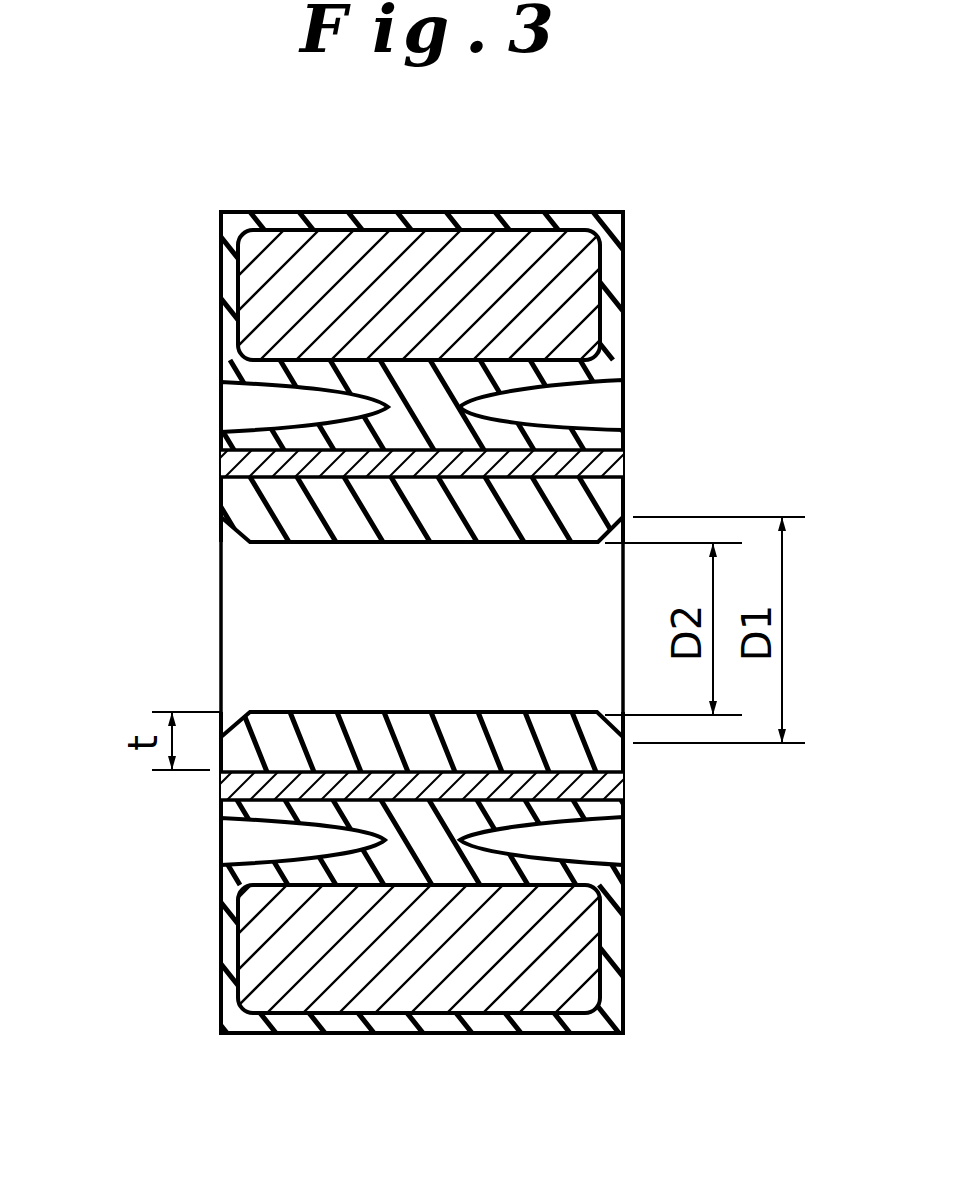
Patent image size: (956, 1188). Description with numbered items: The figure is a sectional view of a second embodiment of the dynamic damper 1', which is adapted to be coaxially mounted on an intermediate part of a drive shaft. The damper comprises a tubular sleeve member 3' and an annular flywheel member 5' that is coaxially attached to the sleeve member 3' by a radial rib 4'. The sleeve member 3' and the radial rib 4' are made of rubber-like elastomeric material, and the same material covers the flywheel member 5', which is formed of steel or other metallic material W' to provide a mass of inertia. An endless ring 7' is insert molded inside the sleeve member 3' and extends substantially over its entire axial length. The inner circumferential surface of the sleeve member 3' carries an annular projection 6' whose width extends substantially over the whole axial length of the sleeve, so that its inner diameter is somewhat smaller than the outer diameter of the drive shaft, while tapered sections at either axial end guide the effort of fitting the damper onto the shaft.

The dynamic damper 1' is at (437, 369).
The sleeve member 3' is at (390, 617).
The radial rib 4' is at (370, 622).
The flywheel member 5' is at (393, 872).
The annular projection 6' is at (360, 627).
The endless ring 7' is at (467, 617).
The metallic material W' is at (418, 675).